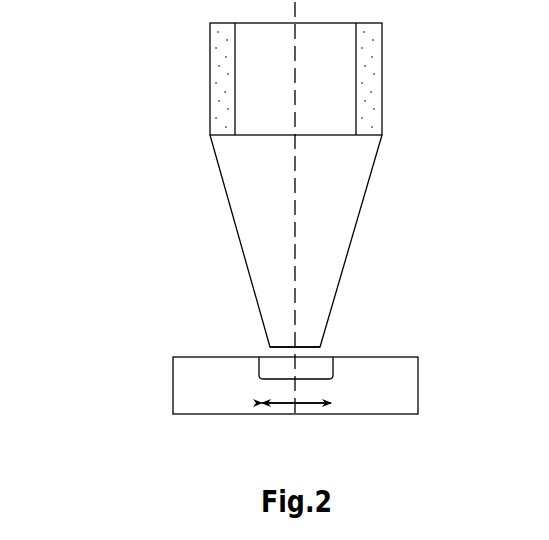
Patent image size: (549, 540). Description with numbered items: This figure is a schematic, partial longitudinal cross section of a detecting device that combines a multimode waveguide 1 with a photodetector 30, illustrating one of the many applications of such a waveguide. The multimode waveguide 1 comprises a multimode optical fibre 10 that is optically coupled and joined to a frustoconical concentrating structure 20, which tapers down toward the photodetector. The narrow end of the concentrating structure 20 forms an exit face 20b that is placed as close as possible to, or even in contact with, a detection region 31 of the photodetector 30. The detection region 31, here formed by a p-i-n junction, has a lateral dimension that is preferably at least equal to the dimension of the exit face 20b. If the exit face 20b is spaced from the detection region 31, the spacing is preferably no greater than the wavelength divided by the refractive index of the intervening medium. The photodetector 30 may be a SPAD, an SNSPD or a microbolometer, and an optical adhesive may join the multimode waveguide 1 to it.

The multimode waveguide 1 is at (119, 68).
The multimode optical fibre 10 is at (409, 75).
The frustoconical concentrating structure 20 is at (378, 237).
The exit face 20b is at (305, 344).
The photodetector 30 is at (421, 385).
The detection region 31 is at (257, 368).